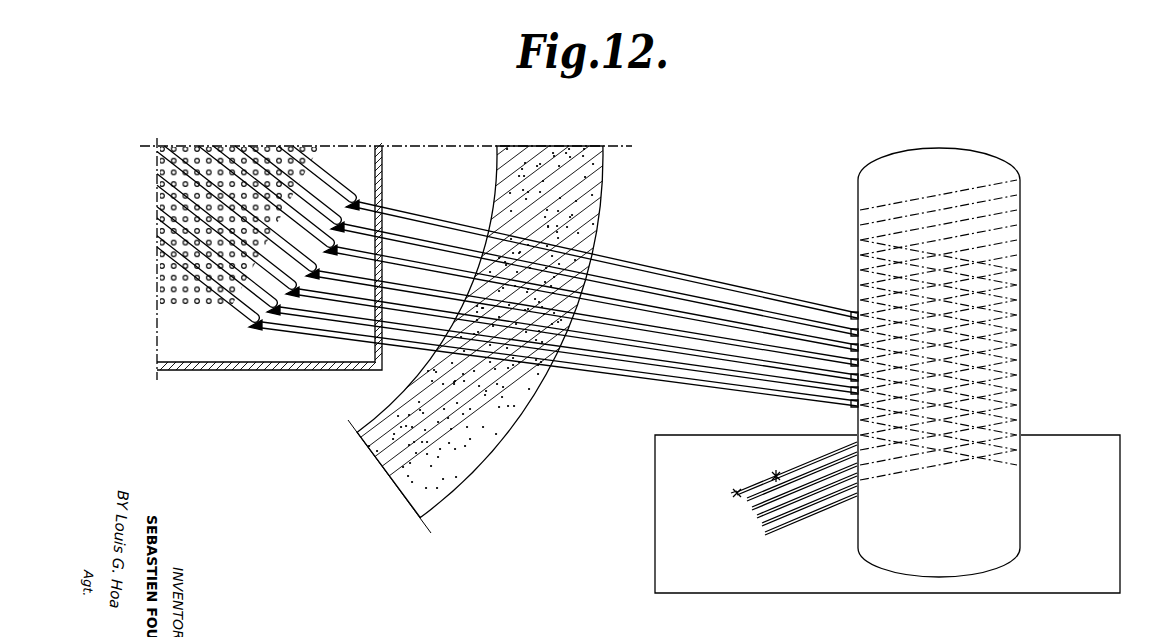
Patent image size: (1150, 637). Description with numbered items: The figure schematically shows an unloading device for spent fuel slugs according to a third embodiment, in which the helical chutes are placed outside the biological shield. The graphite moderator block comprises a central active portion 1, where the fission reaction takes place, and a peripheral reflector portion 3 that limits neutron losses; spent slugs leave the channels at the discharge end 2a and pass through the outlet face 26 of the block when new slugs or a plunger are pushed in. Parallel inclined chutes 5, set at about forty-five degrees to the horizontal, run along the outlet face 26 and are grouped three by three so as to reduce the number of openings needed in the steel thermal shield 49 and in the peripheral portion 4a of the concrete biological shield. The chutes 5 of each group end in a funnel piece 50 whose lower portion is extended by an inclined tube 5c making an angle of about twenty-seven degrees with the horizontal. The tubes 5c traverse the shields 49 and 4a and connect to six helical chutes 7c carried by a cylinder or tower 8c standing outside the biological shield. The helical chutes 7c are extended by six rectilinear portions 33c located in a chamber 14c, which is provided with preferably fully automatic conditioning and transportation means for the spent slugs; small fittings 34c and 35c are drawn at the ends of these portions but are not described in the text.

The central active portion 1 is at (288, 157).
The discharge end 2a is at (313, 155).
The peripheral reflector portion 3 is at (360, 163).
The thermal shield 49 is at (383, 193).
The peripheral portion of the biological shield 4a is at (573, 208).
The outlet face 26 is at (180, 318).
The inclined chutes 5 is at (227, 313).
The funnel piece 50 is at (258, 330).
The inclined tube 5c is at (307, 330).
The helical chutes 7c is at (1018, 230).
The tower 8c is at (1008, 527).
The chamber 14c is at (730, 461).
The valve 34c is at (778, 470).
The fitting 35c is at (734, 486).
The rectilinear portions 33c is at (805, 520).